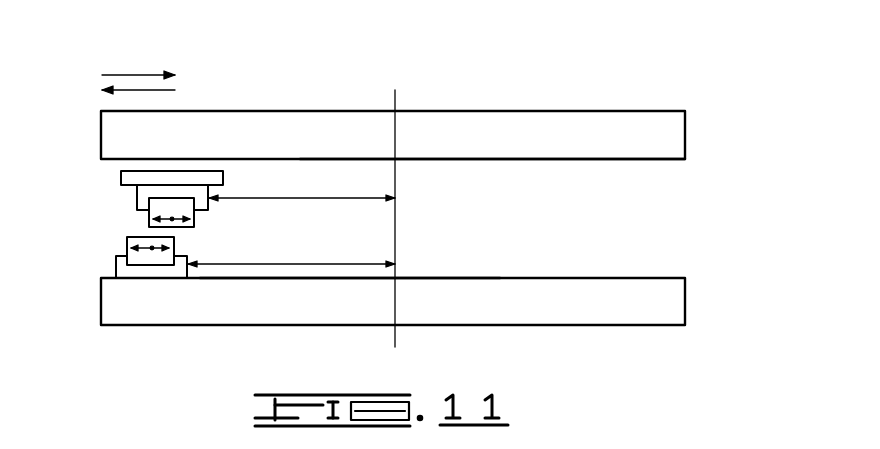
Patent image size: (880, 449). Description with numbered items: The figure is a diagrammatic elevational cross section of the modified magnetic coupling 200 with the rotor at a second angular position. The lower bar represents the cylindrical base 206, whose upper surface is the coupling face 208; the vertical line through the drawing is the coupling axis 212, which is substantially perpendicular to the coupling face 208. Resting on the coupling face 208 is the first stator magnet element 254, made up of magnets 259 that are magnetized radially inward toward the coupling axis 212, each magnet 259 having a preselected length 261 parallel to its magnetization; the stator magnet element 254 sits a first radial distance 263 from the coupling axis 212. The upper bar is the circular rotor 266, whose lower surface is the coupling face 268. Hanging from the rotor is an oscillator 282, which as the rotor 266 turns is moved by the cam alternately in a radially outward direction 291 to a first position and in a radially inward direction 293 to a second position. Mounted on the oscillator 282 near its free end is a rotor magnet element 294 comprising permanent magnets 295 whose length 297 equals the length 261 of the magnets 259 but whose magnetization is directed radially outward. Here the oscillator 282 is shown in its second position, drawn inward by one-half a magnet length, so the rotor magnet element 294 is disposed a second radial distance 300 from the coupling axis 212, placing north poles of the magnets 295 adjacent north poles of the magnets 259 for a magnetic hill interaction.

The modified magnetic coupling 200 is at (543, 72).
The cylindrical base 206 is at (322, 315).
The coupling face 208 is at (296, 268).
The coupling axis 212 is at (396, 101).
The first stator magnet element 254 is at (116, 265).
The magnets 259 is at (153, 258).
The length of magnets 261 is at (152, 246).
The first radial distance 263 is at (300, 265).
The circular rotor 266 is at (545, 117).
The coupling face 268 is at (485, 162).
The oscillator 282 is at (215, 180).
The radially outward direction 291 is at (147, 91).
The radially inward direction 293 is at (132, 77).
The rotor magnet element 294 is at (136, 193).
The permanent magnets 295 is at (158, 203).
The length of magnets 297 is at (170, 214).
The second radial distance 300 is at (350, 197).